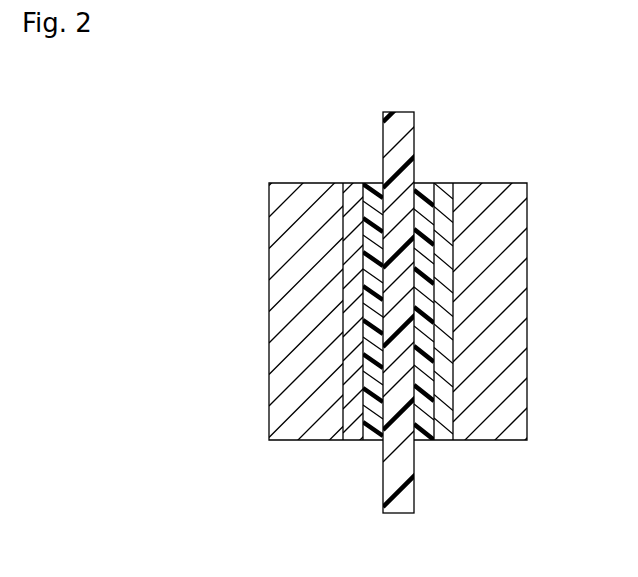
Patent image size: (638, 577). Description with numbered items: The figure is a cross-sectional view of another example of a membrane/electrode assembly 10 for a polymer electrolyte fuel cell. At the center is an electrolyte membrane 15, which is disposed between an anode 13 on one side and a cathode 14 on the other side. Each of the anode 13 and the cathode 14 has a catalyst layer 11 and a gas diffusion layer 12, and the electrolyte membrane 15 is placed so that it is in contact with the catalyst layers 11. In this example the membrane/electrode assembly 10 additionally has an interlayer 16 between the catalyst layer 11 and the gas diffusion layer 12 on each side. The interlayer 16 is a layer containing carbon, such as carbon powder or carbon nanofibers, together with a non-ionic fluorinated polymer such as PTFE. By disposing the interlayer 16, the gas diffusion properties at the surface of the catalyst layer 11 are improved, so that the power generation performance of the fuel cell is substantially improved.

The membrane/electrode assembly 10 is at (463, 139).
The catalyst layer 11 is at (378, 441).
The gas diffusion layer 12 is at (293, 441).
The anode 13 is at (280, 497).
The cathode 14 is at (518, 497).
The electrolyte membrane 15 is at (400, 514).
The interlayer 16 is at (355, 441).